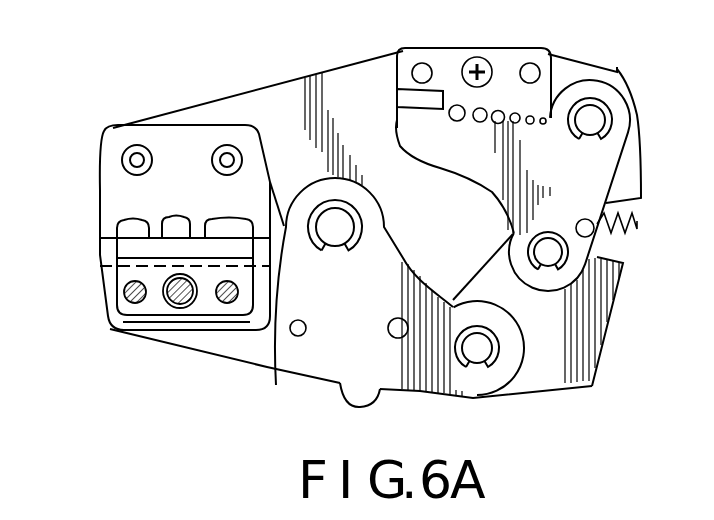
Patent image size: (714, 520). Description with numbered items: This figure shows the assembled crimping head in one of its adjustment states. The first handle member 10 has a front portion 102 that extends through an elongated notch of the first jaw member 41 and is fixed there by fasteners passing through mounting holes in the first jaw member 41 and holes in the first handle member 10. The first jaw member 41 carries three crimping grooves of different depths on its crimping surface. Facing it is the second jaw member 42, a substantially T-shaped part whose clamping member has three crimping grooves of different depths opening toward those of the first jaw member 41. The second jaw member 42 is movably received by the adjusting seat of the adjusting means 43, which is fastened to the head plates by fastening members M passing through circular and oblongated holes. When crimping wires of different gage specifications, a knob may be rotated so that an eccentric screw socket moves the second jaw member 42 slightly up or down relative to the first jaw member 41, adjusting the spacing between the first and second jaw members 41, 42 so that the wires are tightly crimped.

The first handle member 10 is at (348, 86).
The front portion of the first handle member 102 is at (295, 113).
The first jaw member 41 is at (112, 208).
The second jaw member 42 is at (116, 316).
The adjusting means 43 is at (100, 272).
The fastening members M is at (176, 308).